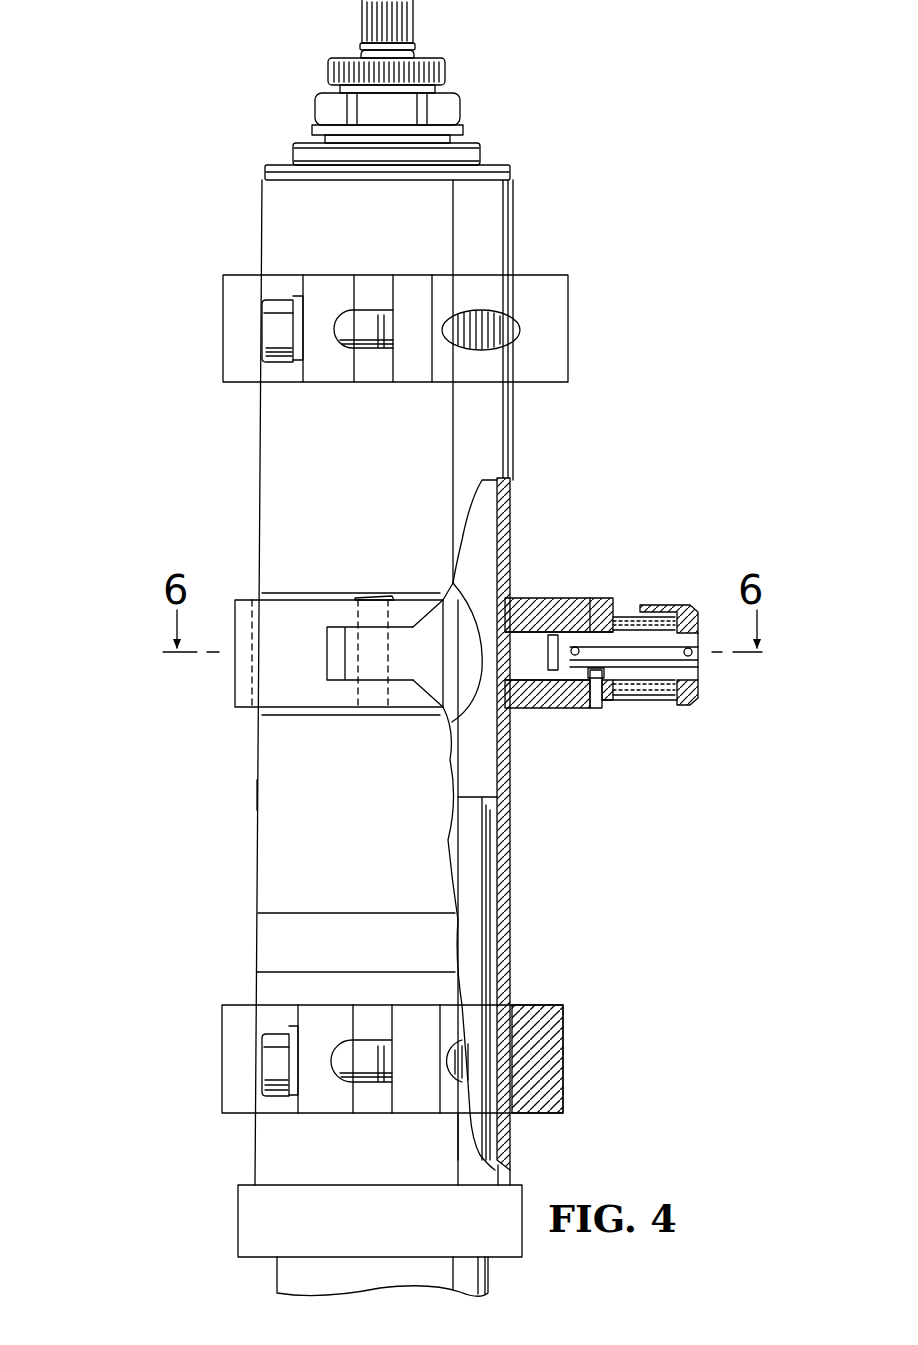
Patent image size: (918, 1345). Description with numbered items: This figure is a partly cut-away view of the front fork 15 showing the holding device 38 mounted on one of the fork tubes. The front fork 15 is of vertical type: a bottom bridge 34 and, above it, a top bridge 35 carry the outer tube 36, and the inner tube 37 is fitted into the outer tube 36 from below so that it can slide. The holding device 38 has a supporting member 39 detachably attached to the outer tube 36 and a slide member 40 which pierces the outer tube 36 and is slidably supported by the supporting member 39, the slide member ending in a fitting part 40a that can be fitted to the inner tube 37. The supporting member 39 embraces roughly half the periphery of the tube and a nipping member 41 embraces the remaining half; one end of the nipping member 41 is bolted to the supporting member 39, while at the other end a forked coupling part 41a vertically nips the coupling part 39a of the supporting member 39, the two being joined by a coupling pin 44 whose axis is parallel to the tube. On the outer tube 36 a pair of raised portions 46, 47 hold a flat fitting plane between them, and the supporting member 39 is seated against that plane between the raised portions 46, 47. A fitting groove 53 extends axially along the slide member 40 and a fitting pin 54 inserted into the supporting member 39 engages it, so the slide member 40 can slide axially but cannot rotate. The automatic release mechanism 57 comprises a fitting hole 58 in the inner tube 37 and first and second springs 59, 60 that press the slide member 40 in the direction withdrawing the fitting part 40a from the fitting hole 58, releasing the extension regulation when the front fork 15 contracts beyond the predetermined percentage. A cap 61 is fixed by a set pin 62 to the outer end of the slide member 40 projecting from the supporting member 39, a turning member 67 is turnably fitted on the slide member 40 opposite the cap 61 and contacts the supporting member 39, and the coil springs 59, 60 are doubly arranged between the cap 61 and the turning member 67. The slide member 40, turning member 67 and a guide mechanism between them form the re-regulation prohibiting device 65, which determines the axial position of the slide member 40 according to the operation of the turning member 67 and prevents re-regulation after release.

The front fork 15 is at (253, 793).
The bottom bridge 34 is at (553, 1043).
The top bridge 35 is at (543, 295).
The outer tube 36 is at (270, 503).
The inner tube 37 is at (486, 807).
The holding device 38 is at (540, 580).
The supporting member 39 is at (558, 605).
The coupling part 39a is at (347, 668).
The slide member 40 is at (530, 708).
The fitting part 40a is at (455, 595).
The nipping member 41 is at (243, 672).
The forked coupling part 41a is at (400, 690).
The coupling pin 44 is at (352, 615).
The raised portion 46 is at (380, 597).
The raised portion 47 is at (272, 720).
The fitting groove 53 is at (687, 606).
The fitting pin 54 is at (597, 708).
The automatic release mechanism 57 is at (480, 925).
The fitting hole 58 is at (488, 910).
The first spring 59 is at (612, 618).
The second spring 60 is at (660, 690).
The cap 61 is at (698, 685).
The set pin 62 is at (694, 640).
The re-regulation prohibiting device 65 is at (578, 646).
The turning member 67 is at (615, 700).